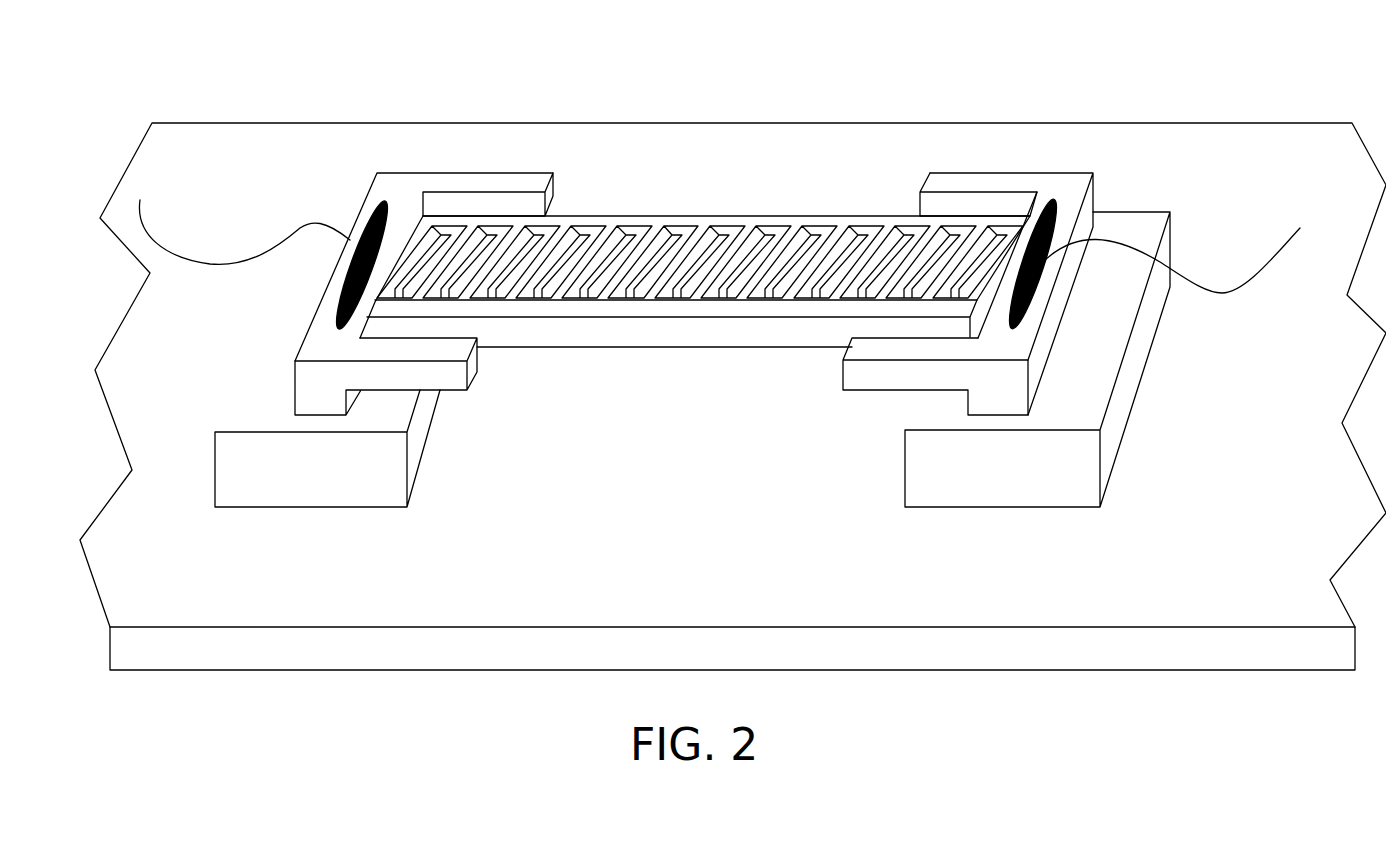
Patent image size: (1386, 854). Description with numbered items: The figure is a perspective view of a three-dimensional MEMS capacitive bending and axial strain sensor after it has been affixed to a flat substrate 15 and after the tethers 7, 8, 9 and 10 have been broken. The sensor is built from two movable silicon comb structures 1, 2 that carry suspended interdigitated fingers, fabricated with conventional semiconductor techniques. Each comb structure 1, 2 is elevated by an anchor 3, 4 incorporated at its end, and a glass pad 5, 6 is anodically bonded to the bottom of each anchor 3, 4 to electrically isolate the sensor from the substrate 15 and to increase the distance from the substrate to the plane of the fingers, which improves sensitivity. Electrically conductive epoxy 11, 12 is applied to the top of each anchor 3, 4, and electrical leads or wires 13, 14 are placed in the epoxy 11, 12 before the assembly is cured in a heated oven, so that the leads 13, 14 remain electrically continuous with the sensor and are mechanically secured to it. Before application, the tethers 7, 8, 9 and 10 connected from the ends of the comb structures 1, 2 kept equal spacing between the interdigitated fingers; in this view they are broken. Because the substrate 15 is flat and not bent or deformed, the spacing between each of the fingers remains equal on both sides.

The movable silicon comb structure 1 is at (730, 213).
The movable silicon comb structure 2 is at (661, 347).
The anchor 3 is at (1000, 419).
The anchor 4 is at (322, 418).
The glass pad 5 is at (1003, 294).
The glass pad 6 is at (465, 288).
The tether 7 is at (557, 181).
The tether 8 is at (470, 378).
The tether 9 is at (965, 171).
The tether 10 is at (868, 392).
The electrically conductive epoxy 11 is at (330, 323).
The electrically conductive epoxy 12 is at (1025, 322).
The electrical lead or wire 13 is at (278, 242).
The electrical lead or wire 14 is at (1222, 294).
The flat substrate 15 is at (916, 669).